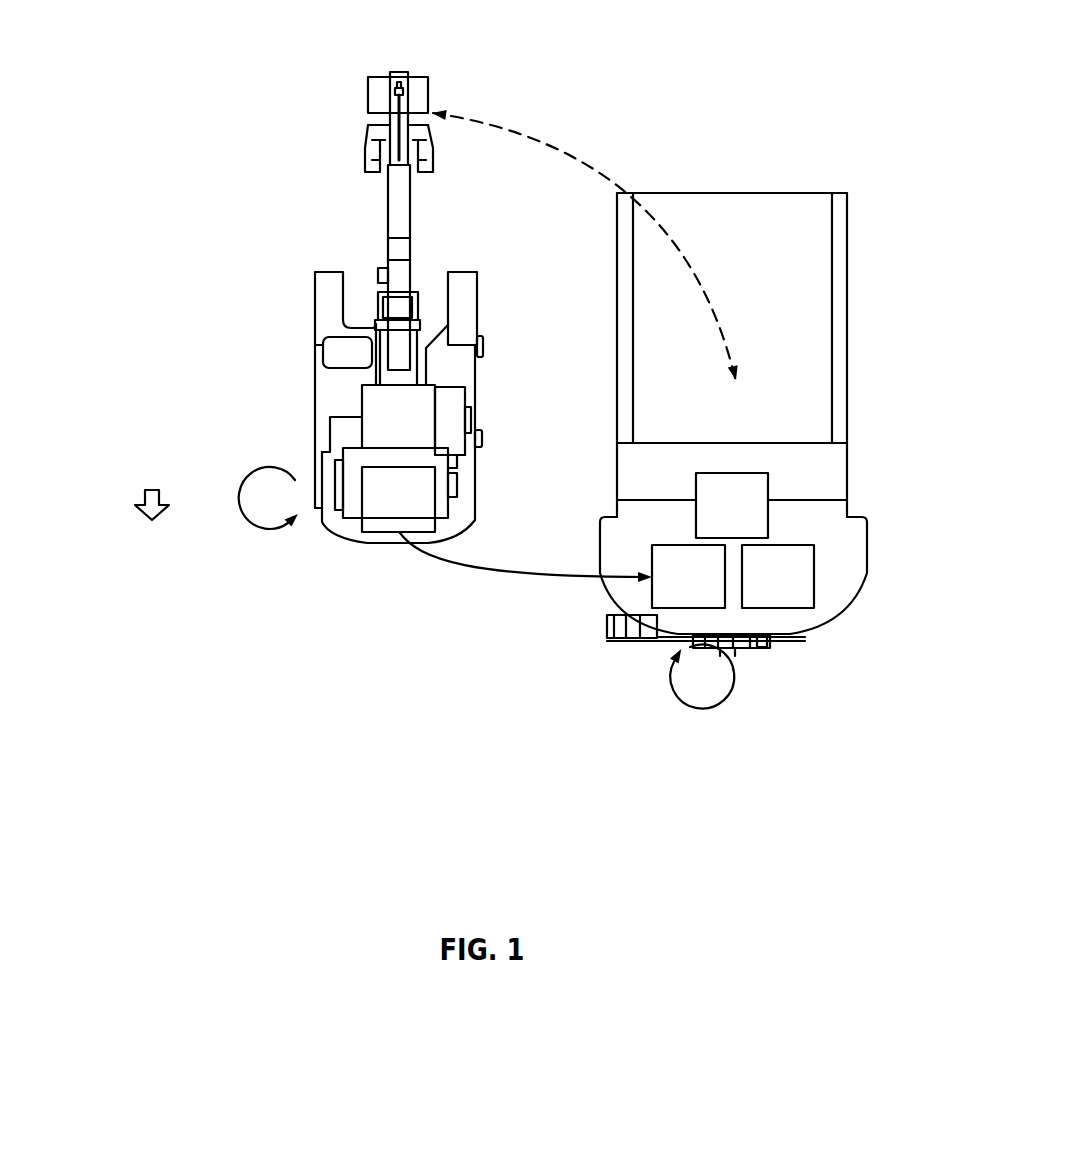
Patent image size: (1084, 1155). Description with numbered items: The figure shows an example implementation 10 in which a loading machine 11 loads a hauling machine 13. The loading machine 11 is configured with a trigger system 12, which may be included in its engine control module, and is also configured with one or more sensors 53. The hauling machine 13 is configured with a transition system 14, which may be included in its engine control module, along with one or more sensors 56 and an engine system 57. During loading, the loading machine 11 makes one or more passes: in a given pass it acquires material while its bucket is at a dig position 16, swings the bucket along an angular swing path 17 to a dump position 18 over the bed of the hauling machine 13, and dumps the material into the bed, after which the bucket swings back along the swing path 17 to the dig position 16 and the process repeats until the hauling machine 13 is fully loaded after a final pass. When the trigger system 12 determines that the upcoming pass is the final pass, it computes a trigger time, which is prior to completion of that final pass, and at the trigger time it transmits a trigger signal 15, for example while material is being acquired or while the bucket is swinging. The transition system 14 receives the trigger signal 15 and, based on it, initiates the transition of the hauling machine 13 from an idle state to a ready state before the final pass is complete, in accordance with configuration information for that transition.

The example implementation 10 is at (138, 50).
The loading machine 11 is at (278, 258).
The trigger system 12 is at (384, 506).
The hauling machine 13 is at (870, 316).
The transition system 14 is at (674, 590).
The trigger signal 15 is at (575, 614).
The dig position 16 is at (551, 74).
The swing path 17 is at (738, 181).
The dump position 18 is at (805, 441).
The sensors 53 is at (384, 430).
The sensors 56 is at (718, 520).
The engine system 57 is at (764, 590).